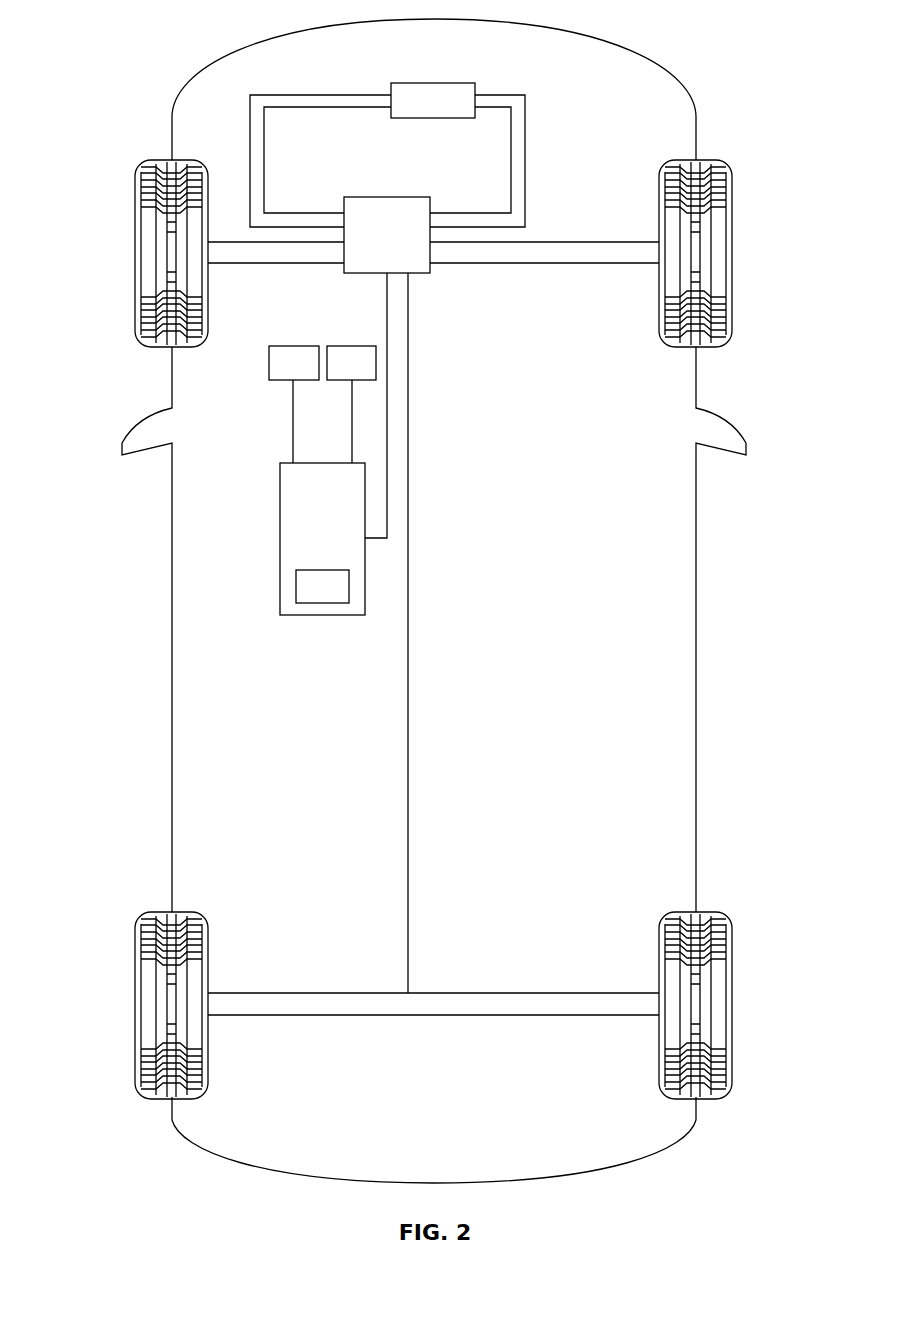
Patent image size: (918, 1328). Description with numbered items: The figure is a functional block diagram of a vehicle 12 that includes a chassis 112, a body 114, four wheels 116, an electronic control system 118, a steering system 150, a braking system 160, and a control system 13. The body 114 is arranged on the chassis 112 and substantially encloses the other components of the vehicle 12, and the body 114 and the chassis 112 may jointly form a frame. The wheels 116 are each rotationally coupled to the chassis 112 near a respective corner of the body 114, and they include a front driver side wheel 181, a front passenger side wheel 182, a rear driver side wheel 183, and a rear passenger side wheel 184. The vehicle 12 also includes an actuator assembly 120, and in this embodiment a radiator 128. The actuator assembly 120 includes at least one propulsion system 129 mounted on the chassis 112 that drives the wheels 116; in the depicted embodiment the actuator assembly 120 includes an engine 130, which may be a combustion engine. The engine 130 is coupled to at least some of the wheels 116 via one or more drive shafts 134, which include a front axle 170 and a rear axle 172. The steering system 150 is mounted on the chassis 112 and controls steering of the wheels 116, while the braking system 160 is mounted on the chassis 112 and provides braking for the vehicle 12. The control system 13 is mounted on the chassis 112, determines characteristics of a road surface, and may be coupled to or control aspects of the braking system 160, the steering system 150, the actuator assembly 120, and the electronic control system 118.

The vehicle 12 is at (160, 41).
The control system 13 is at (296, 590).
The chassis 112 is at (408, 733).
The body 114 is at (172, 612).
The wheels 116 is at (135, 250).
The electronic control system 118 is at (280, 553).
The actuator assembly 120 is at (432, 300).
The radiator 128 is at (437, 83).
The propulsion system 129 is at (416, 198).
The engine 130 is at (385, 230).
The drive shafts 134 is at (433, 628).
The steering system 150 is at (269, 362).
The braking system 160 is at (353, 346).
The front axle 170 is at (578, 263).
The rear axle 172 is at (557, 993).
The front driver side wheel 181 is at (163, 345).
The front passenger side wheel 182 is at (705, 345).
The rear driver side wheel 183 is at (163, 1097).
The rear passenger side wheel 184 is at (705, 1097).